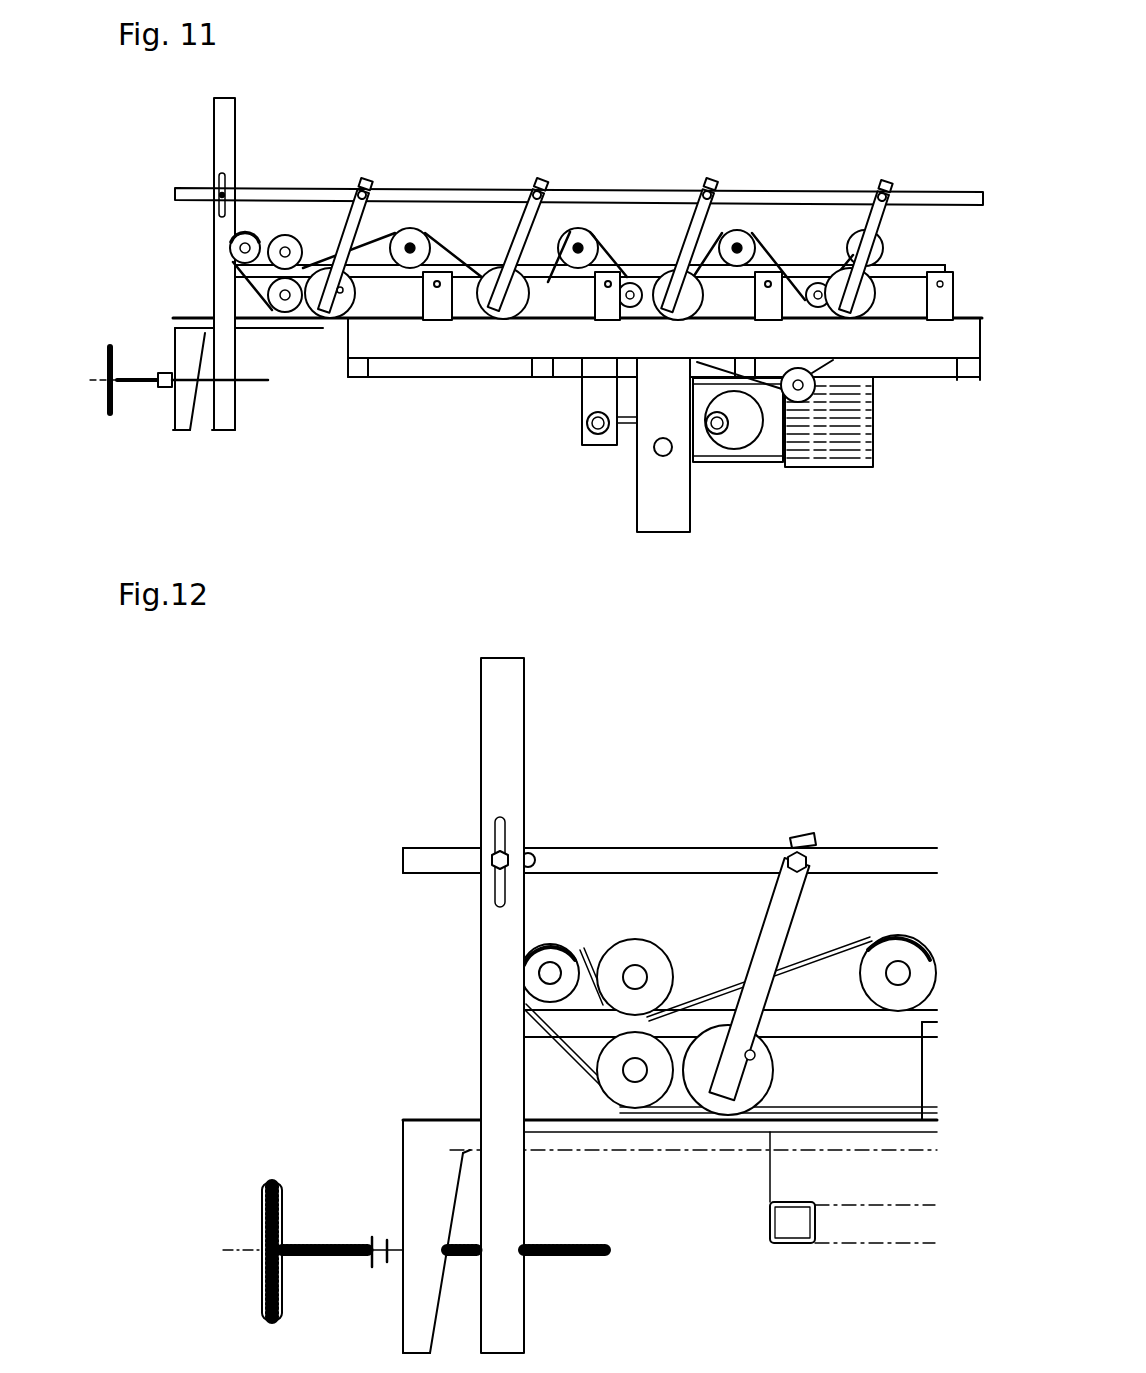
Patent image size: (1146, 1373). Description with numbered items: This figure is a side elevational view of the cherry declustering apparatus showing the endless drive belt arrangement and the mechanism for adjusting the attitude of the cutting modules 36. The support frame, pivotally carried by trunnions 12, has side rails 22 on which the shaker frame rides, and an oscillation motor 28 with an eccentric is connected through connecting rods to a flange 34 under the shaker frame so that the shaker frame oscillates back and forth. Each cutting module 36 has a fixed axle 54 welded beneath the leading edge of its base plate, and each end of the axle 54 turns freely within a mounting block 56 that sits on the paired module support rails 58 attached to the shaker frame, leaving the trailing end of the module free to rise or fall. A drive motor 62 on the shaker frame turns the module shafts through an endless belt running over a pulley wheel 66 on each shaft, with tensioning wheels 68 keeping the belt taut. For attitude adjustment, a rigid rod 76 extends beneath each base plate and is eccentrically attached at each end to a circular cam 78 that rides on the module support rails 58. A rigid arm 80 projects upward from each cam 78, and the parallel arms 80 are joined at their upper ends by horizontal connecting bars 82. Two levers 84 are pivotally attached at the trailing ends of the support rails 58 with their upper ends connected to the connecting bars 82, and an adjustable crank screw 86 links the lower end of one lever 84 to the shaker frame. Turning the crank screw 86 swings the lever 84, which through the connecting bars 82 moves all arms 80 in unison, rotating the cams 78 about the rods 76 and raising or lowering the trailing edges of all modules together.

In FIG. 11, the trunnions 12 is at (657, 448).
In FIG. 11, the side rails 22 is at (423, 343).
In FIG. 11, the oscillation motor 28 is at (765, 460).
In FIG. 11, the flange 34 is at (588, 390).
In FIG. 11, the cutting modules 36 is at (395, 277).
In FIG. 11, the fixed axle 54 is at (940, 287).
In FIG. 11, the mounting block 56 is at (948, 313).
In FIG. 12, the module support rails 58 is at (610, 1142).
In FIG. 11, the drive motor 62 is at (798, 400).
In FIG. 11, the pulley wheel 66 is at (242, 237).
In FIG. 12, the pulley wheel 66 is at (537, 950).
In FIG. 11, the tensioning wheels 68 is at (270, 290).
In FIG. 12, the tensioning wheels 68 is at (645, 1088).
In FIG. 11, the rigid rod 76 is at (338, 300).
In FIG. 12, the rigid rod 76 is at (757, 1055).
In FIG. 11, the circular cam 78 is at (338, 300).
In FIG. 12, the circular cam 78 is at (758, 1090).
In FIG. 11, the rigid arm 80 is at (357, 227).
In FIG. 12, the rigid arm 80 is at (767, 917).
In FIG. 11, the connecting bars 82 is at (285, 190).
In FIG. 12, the connecting bars 82 is at (850, 863).
In FIG. 11, the levers 84 is at (213, 133).
In FIG. 12, the levers 84 is at (490, 748).
In FIG. 11, the crank screw 86 is at (110, 413).
In FIG. 12, the crank screw 86 is at (265, 1183).